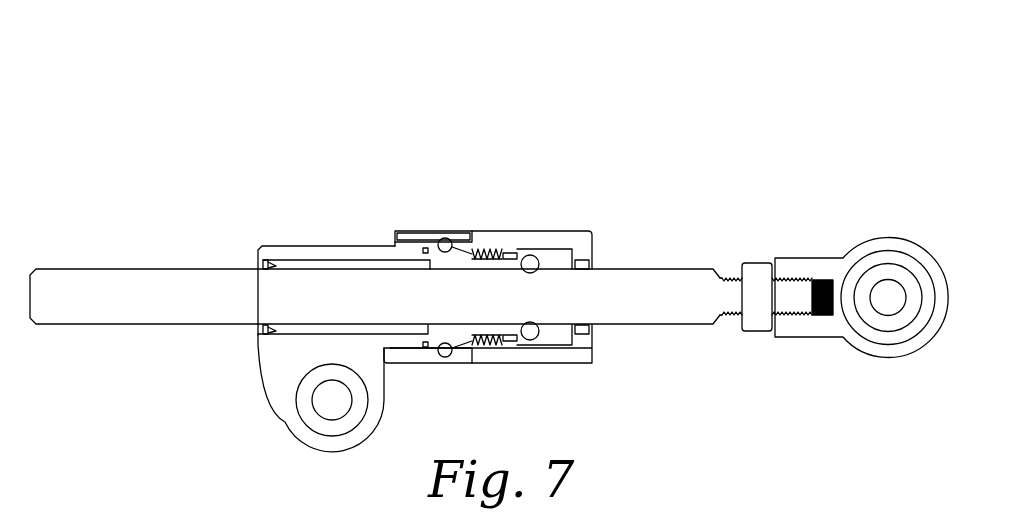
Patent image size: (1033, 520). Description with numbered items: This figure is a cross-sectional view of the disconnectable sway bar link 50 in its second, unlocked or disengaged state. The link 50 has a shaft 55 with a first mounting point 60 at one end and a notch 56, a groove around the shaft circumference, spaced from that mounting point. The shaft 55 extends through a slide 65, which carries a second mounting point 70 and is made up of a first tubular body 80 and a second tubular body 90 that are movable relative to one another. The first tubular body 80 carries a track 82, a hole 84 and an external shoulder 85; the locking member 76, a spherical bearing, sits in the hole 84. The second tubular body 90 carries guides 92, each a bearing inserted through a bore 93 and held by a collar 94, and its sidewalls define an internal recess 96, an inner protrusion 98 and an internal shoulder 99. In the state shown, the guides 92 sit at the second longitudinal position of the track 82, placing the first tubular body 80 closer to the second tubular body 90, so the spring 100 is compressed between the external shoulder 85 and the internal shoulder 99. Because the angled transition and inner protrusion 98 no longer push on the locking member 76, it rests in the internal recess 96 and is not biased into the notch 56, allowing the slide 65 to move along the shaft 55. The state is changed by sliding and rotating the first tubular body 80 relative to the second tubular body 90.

The disconnectable sway bar link 50 is at (348, 146).
The shaft 55 is at (123, 288).
The notch 56 is at (567, 290).
The first mounting point 60 is at (900, 245).
The slide 65 is at (352, 196).
The second mounting point 70 is at (300, 440).
The locking member 76 is at (532, 257).
The first tubular body 80 is at (282, 248).
The track 82 is at (460, 357).
The hole 84 is at (540, 260).
The external shoulder 85 is at (492, 358).
The second tubular body 90 is at (473, 230).
The guide 92 is at (445, 358).
The bore 93 is at (440, 238).
The collar 94 is at (407, 228).
The internal recess 96 is at (560, 342).
The inner protrusion 98 is at (505, 256).
The internal shoulder 99 is at (522, 358).
The spring 100 is at (513, 233).